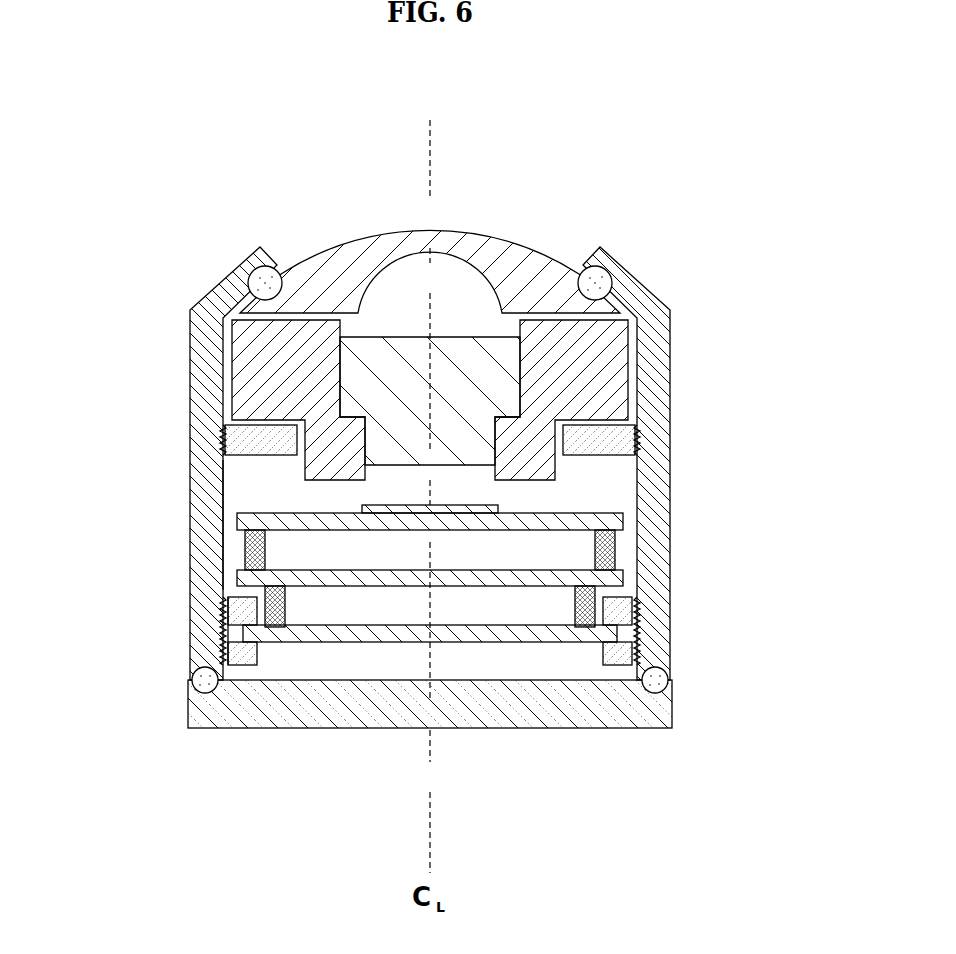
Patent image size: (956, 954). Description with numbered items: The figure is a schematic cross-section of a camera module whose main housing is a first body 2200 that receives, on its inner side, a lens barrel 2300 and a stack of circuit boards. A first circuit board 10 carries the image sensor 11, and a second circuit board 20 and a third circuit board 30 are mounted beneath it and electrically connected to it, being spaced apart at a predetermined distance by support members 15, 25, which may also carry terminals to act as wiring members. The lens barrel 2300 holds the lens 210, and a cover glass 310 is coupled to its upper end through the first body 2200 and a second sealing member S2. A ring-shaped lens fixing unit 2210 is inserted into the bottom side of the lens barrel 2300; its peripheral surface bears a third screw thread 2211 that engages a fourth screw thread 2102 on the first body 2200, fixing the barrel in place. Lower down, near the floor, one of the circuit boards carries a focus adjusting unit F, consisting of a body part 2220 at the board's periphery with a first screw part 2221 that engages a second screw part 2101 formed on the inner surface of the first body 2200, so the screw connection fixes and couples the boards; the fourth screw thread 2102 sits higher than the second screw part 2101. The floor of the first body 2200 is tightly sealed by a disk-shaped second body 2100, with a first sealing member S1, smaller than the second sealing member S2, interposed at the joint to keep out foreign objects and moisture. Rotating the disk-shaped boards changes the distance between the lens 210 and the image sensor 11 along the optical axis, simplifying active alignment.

The cover glass 310 is at (470, 240).
The lens 210 is at (463, 353).
The second sealing member S2 is at (607, 275).
The lens barrel 2300 is at (590, 353).
The lens fixing unit 2210 is at (250, 433).
The third screw thread 2211 is at (225, 433).
The fourth screw thread 2102 is at (223, 450).
The image sensor 11 is at (485, 505).
The second body 2100 is at (670, 483).
The first circuit board 10 is at (242, 519).
The support member 15 is at (617, 548).
The second circuit board 20 is at (240, 572).
The support member 25 is at (587, 603).
The first screw part 2221 is at (225, 605).
The second screw part 2101 is at (223, 627).
The focus adjusting unit F is at (95, 580).
The body part 2220 is at (228, 655).
The third circuit board 30 is at (330, 638).
The first sealing member S1 is at (668, 672).
The first body 2200 is at (593, 715).